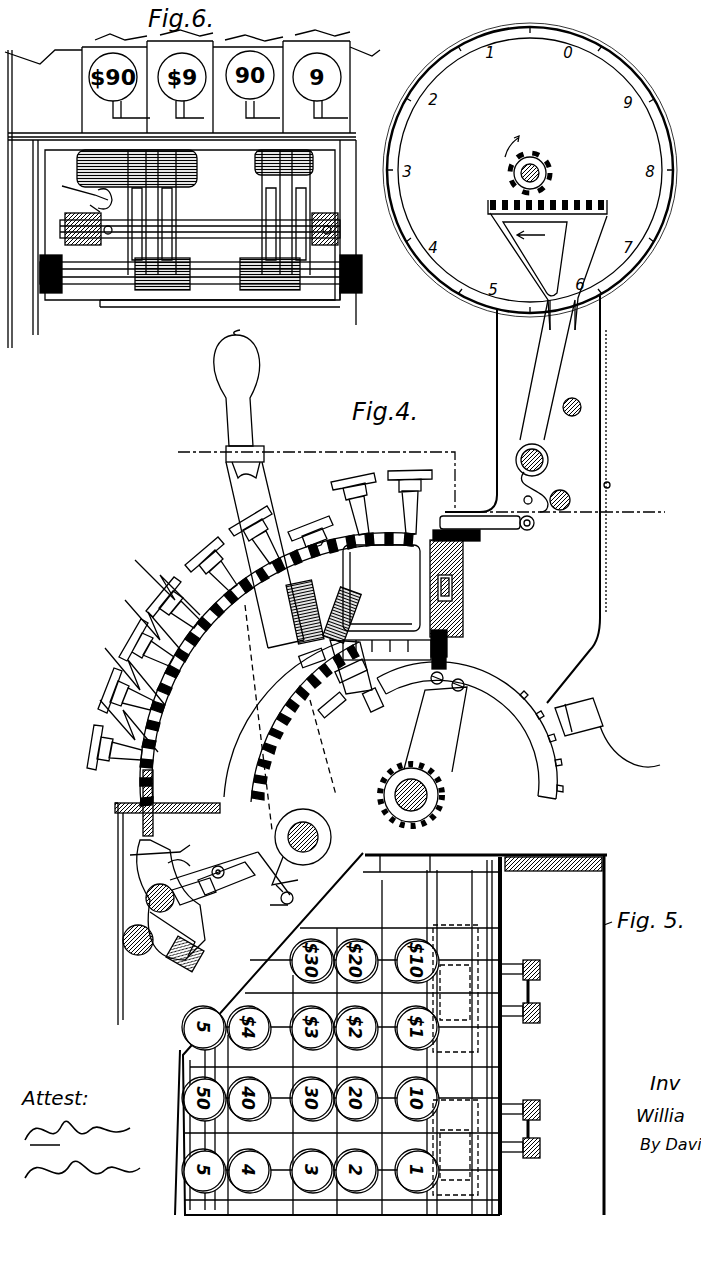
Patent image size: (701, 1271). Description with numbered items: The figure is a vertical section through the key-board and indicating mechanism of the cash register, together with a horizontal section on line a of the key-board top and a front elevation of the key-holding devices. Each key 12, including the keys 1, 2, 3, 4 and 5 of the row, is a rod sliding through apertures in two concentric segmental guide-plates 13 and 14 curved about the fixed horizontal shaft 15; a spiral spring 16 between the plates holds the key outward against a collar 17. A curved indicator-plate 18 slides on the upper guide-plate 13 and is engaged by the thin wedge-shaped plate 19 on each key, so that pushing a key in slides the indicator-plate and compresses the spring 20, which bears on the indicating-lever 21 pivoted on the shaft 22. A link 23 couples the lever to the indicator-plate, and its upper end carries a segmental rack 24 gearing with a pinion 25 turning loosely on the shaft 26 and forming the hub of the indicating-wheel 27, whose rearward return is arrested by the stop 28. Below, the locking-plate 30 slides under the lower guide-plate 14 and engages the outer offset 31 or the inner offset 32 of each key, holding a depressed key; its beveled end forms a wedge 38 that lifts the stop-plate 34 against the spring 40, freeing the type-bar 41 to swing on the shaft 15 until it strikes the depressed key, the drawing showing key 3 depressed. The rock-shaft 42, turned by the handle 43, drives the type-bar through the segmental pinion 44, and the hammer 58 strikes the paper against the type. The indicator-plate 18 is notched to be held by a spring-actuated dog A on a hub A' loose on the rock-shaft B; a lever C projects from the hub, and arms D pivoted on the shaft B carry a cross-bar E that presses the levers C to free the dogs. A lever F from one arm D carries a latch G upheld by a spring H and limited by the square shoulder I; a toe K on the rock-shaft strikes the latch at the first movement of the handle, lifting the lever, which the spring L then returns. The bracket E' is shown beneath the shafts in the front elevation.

In FIG. 4, the key 1 is at (411, 470).
In FIG. 4, the key 2 is at (353, 498).
In FIG. 4, the key 3 is at (310, 526).
In FIG. 4, the key 4 is at (254, 533).
In FIG. 4, the key 5 is at (211, 562).
In FIG. 4, the key 12 is at (277, 646).
In FIG. 4, the upper segmental guide-plate 13 is at (381, 588).
In FIG. 4, the lower segmental guide-plate 14 is at (360, 620).
In FIG. 4, the fixed horizontal shaft 15 is at (428, 795).
In FIG. 4, the spiral spring 16 is at (319, 611).
In FIG. 4, the collar 17 is at (340, 600).
In FIG. 6, the indicator-plate 18 is at (230, 116).
In FIG. 4, the indicator-plate 18 is at (470, 541).
In FIG. 4, the wedge-shaped plate 19 is at (420, 495).
In FIG. 4, the spring 20 is at (552, 488).
In FIG. 4, the indicating-lever 21 is at (547, 370).
In FIG. 5, the indicating-lever 21 is at (548, 1158).
In FIG. 4, the horizontal shaft 22 is at (548, 455).
In FIG. 4, the link 23 is at (505, 529).
In FIG. 5, the link 23 is at (514, 1168).
In FIG. 4, the segmental rack 24 is at (600, 226).
In FIG. 4, the pinion 25 is at (552, 168).
In FIG. 4, the horizontal shaft 26 is at (521, 173).
In FIG. 4, the indicating-wheel 27 is at (525, 95).
In FIG. 4, the stop 28 is at (574, 398).
In FIG. 4, the locking-plate 30 is at (387, 642).
In FIG. 4, the outer offset 31 is at (355, 703).
In FIG. 4, the inner offset 32 is at (322, 663).
In FIG. 4, the stop-plate 34 is at (446, 661).
In FIG. 4, the wedge 38 is at (447, 645).
In FIG. 4, the spring 40 is at (463, 580).
In FIG. 4, the type-bar 41 is at (399, 730).
In FIG. 6, the rock-shaft 42 is at (197, 166).
In FIG. 4, the rock-shaft 42 is at (318, 837).
In FIG. 4, the handle 43 is at (259, 489).
In FIG. 4, the segmental pinion 44 is at (400, 760).
In FIG. 4, the hammer 58 is at (614, 709).
In FIG. 4, the section line a a is at (420, 481).
In FIG. 6, the dog A is at (218, 212).
In FIG. 4, the dog A is at (143, 854).
In FIG. 4, the hub A' is at (131, 899).
In FIG. 6, the rock-shaft B is at (208, 222).
In FIG. 4, the rock-shaft B is at (195, 903).
In FIG. 4, the lever C is at (195, 942).
In FIG. 6, the arm D is at (201, 234).
In FIG. 4, the arm D is at (147, 940).
In FIG. 4, the cross-bar E is at (185, 959).
In FIG. 6, the bracket E' is at (220, 306).
In FIG. 4, the lever F is at (221, 878).
In FIG. 6, the latch G is at (87, 199).
In FIG. 4, the latch G is at (222, 862).
In FIG. 4, the spring H is at (265, 878).
In FIG. 4, the square shoulder I is at (200, 848).
In FIG. 6, the toe K is at (77, 189).
In FIG. 4, the toe K is at (277, 894).
In FIG. 6, the spring L is at (89, 206).
In FIG. 4, the spring L is at (179, 857).